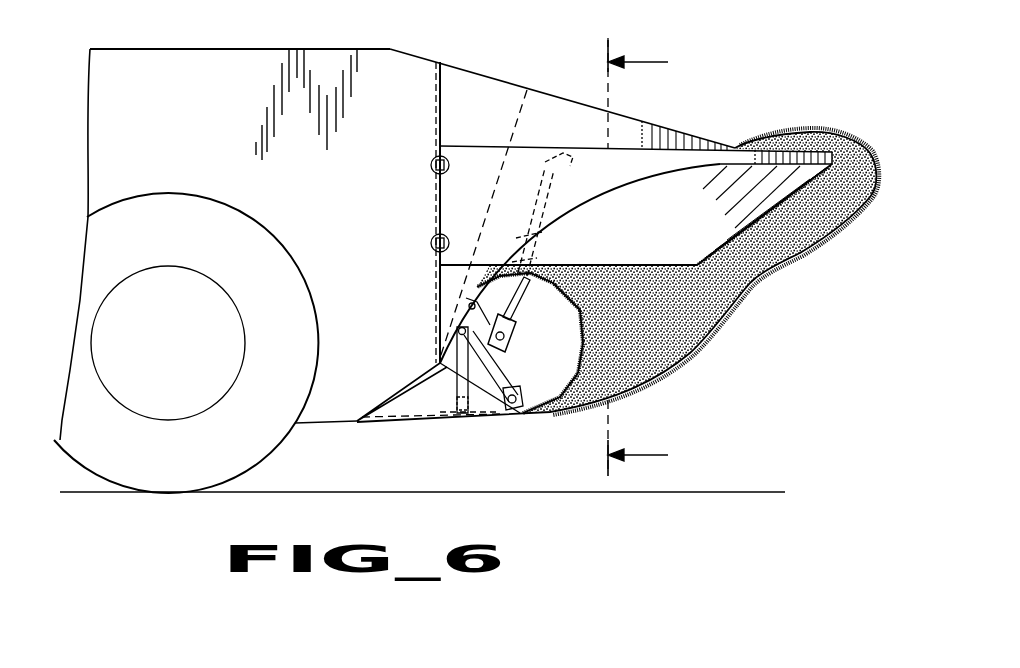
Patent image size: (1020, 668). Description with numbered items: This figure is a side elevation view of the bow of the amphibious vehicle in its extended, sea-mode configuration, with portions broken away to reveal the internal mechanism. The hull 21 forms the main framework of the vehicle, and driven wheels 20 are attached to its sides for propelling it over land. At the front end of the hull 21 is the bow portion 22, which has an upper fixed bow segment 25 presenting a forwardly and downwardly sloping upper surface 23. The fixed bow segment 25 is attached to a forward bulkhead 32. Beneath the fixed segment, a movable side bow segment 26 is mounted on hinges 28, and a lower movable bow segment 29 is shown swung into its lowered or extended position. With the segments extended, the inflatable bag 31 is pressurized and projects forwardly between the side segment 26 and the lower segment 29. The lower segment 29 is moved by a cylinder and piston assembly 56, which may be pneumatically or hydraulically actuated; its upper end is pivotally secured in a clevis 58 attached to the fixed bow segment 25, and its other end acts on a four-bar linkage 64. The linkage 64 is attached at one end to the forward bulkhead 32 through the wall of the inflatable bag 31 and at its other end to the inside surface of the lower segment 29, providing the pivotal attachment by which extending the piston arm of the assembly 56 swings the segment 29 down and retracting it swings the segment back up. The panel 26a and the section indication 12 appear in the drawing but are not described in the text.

The driven wheels 20 is at (182, 235).
The hull 21 is at (180, 113).
The bow portion 22 is at (741, 92).
The upper surface 23 is at (470, 72).
The upper fixed bow segment 25 is at (548, 97).
The right movable side bow segment 26 is at (805, 150).
The spoiler side panel 26a is at (703, 208).
The hinges 28 is at (432, 170).
The lower movable bow segment 29 is at (432, 420).
The inflatable bag 31 is at (712, 328).
The forward bulkhead 32 is at (517, 115).
The section line 12 is at (660, 57).
The cylinder and piston assembly 56 is at (548, 240).
The clevis 58 is at (576, 156).
The 4-bar linkage 64 is at (500, 358).